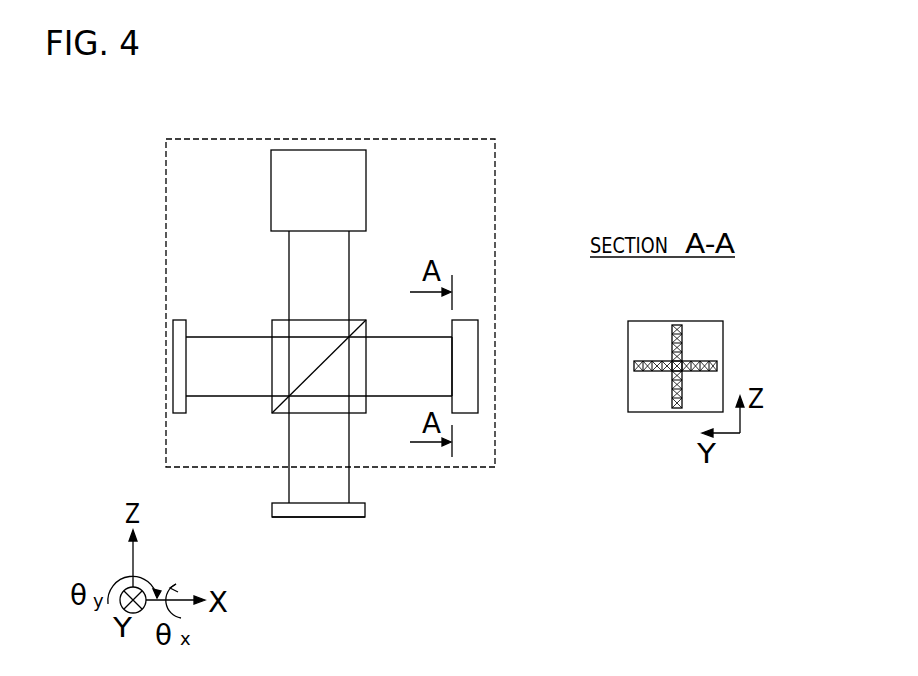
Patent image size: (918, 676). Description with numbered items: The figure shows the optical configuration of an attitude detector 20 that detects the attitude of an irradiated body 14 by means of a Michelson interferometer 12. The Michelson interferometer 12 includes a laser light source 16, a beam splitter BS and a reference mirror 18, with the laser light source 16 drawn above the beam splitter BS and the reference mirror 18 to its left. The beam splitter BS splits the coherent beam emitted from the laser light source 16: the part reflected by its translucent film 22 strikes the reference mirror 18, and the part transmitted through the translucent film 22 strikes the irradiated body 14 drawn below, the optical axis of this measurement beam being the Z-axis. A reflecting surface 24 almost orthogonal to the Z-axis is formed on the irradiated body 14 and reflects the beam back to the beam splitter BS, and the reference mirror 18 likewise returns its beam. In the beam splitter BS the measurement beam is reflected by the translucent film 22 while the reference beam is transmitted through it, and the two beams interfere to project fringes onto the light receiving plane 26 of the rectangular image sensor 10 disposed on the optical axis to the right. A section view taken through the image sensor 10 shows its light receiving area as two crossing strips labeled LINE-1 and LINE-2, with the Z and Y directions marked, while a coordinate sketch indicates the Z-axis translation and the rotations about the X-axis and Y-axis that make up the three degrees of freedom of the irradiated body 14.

The rectangular image sensor 10 is at (464, 326).
The Michelson interferometer 12 is at (252, 256).
The irradiated body 14 is at (321, 512).
The laser light source 16 is at (366, 189).
The reference mirror 18 is at (186, 330).
The attitude detector 20 is at (459, 137).
The translucent film 22 is at (300, 383).
The reflecting surface 24 is at (335, 503).
The light receiving plane 26 is at (452, 352).
The beam splitter BS is at (336, 320).
The first line pattern on mirror section LINE-1 is at (650, 373).
The second line pattern on mirror section LINE-2 is at (683, 345).